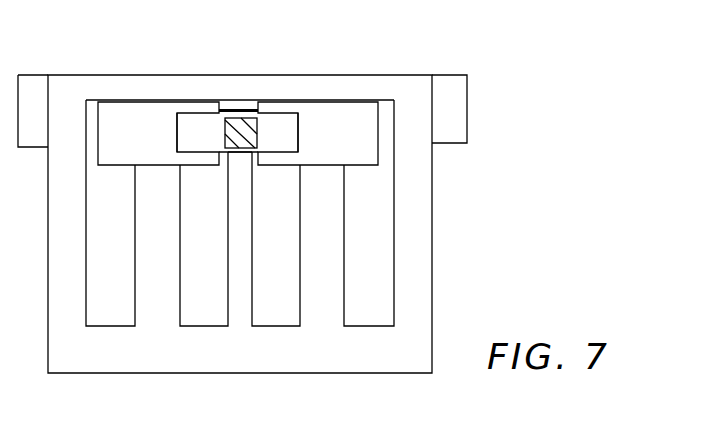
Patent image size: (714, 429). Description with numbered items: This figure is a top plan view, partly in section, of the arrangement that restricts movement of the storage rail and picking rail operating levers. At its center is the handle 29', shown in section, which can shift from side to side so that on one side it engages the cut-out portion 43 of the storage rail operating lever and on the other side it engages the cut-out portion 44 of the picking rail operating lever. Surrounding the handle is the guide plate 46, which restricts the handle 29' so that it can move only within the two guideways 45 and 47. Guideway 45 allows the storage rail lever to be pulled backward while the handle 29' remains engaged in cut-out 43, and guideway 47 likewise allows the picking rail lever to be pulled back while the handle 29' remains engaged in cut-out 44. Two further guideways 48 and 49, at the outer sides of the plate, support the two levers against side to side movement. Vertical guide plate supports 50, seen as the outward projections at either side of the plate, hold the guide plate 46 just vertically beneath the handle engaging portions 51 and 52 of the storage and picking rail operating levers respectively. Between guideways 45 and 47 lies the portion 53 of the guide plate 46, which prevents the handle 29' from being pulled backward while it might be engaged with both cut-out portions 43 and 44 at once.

The handle 29' is at (246, 90).
The cut-out portion 43 is at (194, 128).
The cut-out portion 44 is at (288, 131).
The guideway 45 is at (214, 266).
The guide plate 46 is at (433, 212).
The guideway 47 is at (262, 266).
The guideway 48 is at (118, 266).
The guideway 49 is at (381, 264).
The vertical guide plate support 50 is at (467, 119).
The handle engaging portion 51 is at (141, 146).
The handle engaging portion 52 is at (353, 146).
The portion of guide plate 53 is at (249, 194).